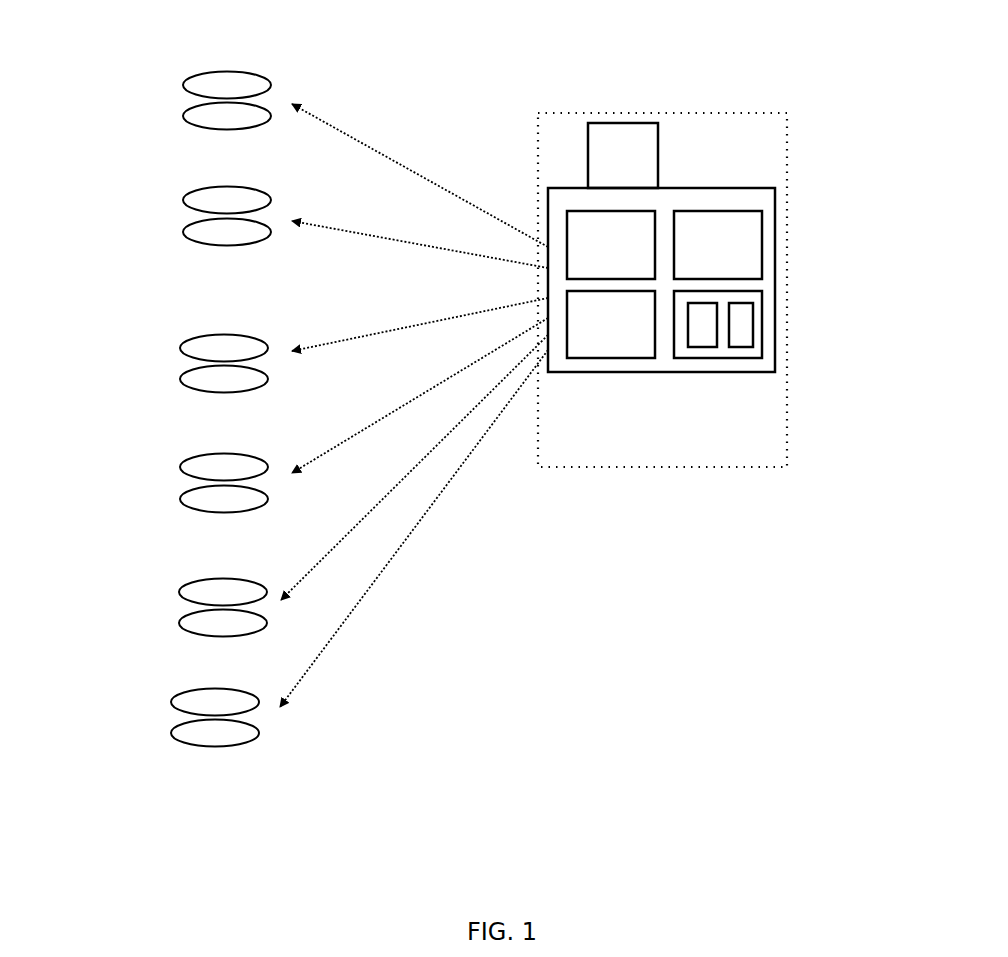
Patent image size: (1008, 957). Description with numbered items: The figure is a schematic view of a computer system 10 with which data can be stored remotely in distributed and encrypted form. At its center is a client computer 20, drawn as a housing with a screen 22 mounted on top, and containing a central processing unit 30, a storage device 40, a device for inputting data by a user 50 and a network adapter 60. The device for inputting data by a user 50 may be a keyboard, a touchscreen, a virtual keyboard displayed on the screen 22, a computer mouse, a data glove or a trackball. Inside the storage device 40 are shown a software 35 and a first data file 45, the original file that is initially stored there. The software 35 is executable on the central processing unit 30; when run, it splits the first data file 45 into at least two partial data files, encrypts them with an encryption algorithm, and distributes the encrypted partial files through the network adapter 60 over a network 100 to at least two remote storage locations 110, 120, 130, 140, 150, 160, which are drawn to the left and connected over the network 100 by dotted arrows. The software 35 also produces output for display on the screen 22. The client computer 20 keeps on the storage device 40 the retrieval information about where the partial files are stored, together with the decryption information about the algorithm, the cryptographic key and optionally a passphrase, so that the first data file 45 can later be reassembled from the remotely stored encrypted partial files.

The computer system 10 is at (568, 111).
The client computer 20 is at (688, 187).
The screen 22 is at (620, 118).
The central processing unit 30 is at (750, 238).
The software 35 is at (703, 320).
The storage device 40 is at (757, 329).
The first data file 45 is at (742, 320).
The device for inputting data by a user 50 is at (590, 215).
The network adapter 60 is at (634, 345).
The network 100 is at (433, 532).
The remote storage location 110 is at (189, 103).
The remote storage location 120 is at (189, 218).
The remote storage location 130 is at (186, 366).
The remote storage location 140 is at (186, 483).
The remote storage location 150 is at (186, 606).
The remote storage location 160 is at (178, 718).